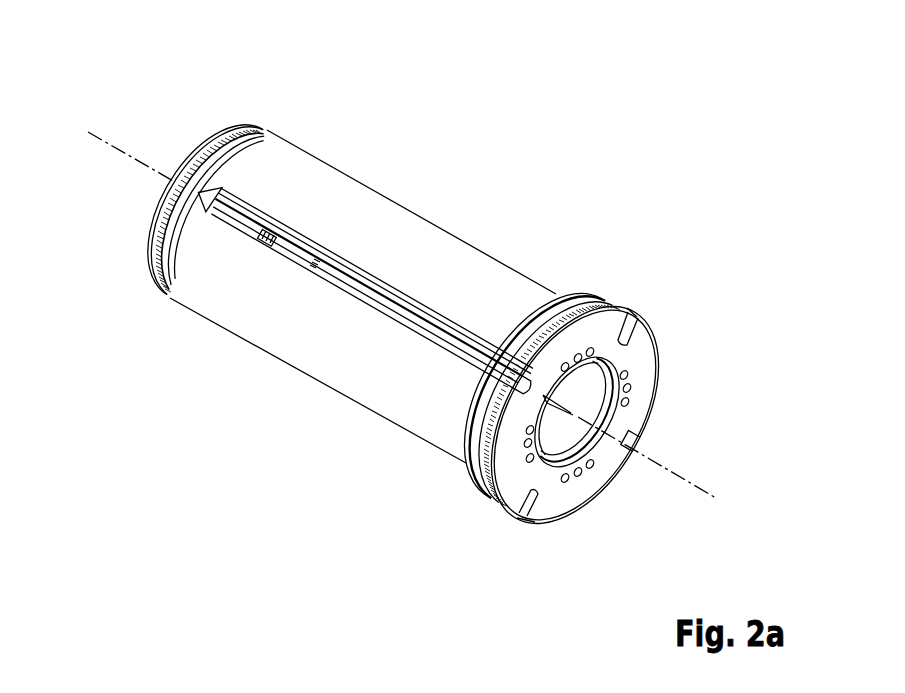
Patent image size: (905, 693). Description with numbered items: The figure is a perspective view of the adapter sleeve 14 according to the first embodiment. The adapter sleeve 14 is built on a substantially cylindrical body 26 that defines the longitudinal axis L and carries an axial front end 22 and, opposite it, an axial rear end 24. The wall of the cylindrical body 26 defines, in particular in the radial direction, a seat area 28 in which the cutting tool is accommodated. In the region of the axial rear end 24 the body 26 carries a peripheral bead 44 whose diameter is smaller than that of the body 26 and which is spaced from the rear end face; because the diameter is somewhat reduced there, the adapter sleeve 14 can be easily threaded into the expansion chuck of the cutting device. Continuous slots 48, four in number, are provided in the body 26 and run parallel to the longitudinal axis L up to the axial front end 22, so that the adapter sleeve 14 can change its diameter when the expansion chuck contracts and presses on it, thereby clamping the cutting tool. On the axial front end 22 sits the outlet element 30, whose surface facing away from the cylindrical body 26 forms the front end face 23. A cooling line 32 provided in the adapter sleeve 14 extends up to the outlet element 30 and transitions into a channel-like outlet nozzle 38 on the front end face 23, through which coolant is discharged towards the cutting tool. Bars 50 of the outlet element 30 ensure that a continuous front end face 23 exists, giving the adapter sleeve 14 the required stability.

The adapter sleeve 14 is at (405, 308).
The axial rear end 24 is at (352, 237).
The bead 44 is at (210, 158).
The cylindrical body 26 is at (370, 196).
The continuous slots 48 is at (430, 304).
The axial front end 22 is at (589, 408).
The front end face 23 is at (601, 326).
The outlet element 30 is at (650, 370).
The seat area 28 is at (596, 404).
The cooling line 32 is at (573, 500).
The outlet nozzle 38 is at (603, 477).
The bars 50 is at (547, 487).
The longitudinal axis L is at (100, 140).